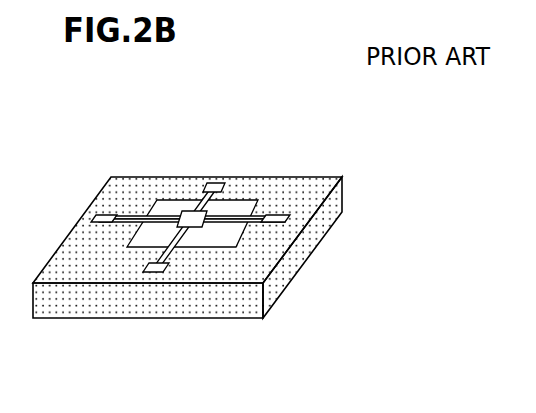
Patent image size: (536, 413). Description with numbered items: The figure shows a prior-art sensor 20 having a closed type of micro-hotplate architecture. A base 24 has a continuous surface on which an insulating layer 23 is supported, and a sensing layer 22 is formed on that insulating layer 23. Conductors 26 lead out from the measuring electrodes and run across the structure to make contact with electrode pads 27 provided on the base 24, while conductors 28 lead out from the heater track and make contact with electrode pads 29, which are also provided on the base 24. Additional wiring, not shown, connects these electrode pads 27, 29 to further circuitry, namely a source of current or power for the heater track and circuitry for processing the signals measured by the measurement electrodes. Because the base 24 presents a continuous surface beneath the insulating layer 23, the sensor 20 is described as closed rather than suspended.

The sensor 20 is at (76, 174).
The sensing layer 22 is at (185, 212).
The insulating layer 23 is at (220, 235).
The base 24 is at (315, 193).
The conductors 26 is at (232, 220).
The electrode pads 27 is at (97, 222).
The conductors 28 is at (205, 195).
The electrode pads 29 is at (218, 183).